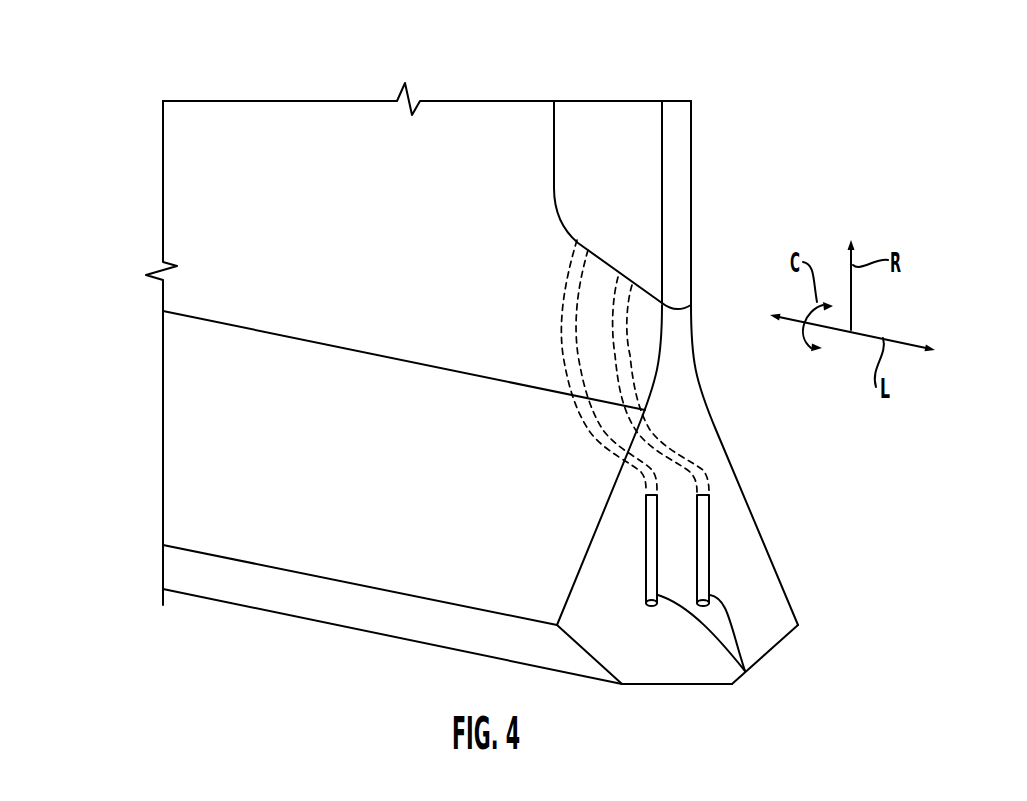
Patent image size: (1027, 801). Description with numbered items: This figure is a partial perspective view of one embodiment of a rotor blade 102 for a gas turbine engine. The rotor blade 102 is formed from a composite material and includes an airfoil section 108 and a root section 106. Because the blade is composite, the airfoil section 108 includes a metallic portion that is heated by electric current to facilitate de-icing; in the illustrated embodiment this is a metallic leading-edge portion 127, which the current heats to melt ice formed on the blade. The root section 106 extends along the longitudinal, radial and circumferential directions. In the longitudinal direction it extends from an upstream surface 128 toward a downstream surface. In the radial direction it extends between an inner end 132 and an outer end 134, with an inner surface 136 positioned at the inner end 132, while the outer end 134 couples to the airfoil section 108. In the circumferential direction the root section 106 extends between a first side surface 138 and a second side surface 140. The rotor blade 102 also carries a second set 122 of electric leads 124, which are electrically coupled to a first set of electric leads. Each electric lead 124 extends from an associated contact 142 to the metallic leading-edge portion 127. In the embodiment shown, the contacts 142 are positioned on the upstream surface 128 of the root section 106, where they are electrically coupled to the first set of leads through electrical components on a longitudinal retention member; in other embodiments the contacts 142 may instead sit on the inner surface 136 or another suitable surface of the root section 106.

The rotor blade 102 is at (127, 43).
The root section 106 is at (357, 655).
The airfoil section 108 is at (197, 182).
The second set of electric leads 122 is at (541, 257).
The electric leads 124 is at (567, 363).
The metallic leading-edge portion 127 is at (637, 166).
The upstream surface 128 is at (616, 615).
The inner end 132 is at (174, 630).
The outer end 134 is at (126, 371).
The inner surface 136 is at (658, 684).
The first side surface 138 is at (750, 505).
The second side surface 140 is at (218, 465).
The contacts 142 is at (752, 673).